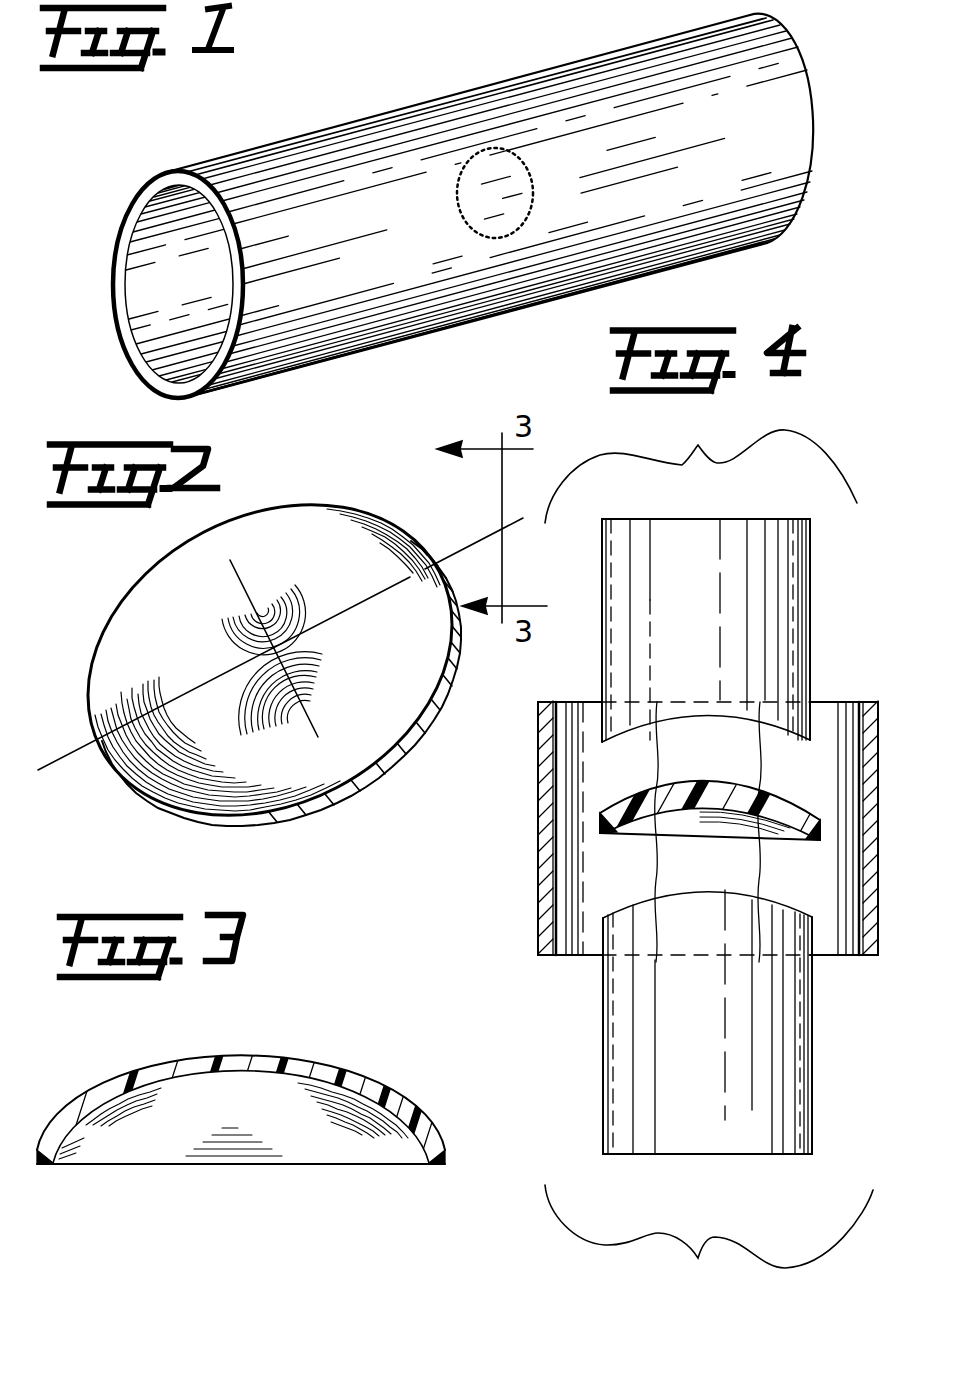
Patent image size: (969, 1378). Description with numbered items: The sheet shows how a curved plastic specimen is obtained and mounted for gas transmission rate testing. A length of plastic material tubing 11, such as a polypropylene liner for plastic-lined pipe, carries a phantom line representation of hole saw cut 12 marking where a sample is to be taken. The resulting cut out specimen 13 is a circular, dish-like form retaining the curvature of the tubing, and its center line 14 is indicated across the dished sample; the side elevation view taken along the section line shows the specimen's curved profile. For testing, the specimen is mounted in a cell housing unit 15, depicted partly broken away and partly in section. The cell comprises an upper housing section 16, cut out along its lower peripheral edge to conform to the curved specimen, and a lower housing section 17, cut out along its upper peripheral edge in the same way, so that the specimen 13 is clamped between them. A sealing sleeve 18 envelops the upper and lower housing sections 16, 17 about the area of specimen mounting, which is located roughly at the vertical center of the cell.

In FIG. 1, the length of plastic material tubing 11 is at (462, 113).
In FIG. 1, the phantom line representation of hole saw cut 12 is at (533, 177).
In FIG. 2, the cut out specimen 13 is at (281, 540).
In FIG. 3, the cut out specimen 13 is at (370, 1078).
In FIG. 4, the cut out specimen 13 is at (783, 806).
In FIG. 2, the center line of specimen 14 is at (70, 757).
In FIG. 4, the cell housing unit 15 is at (495, 813).
In FIG. 4, the upper housing section 16 is at (810, 590).
In FIG. 4, the lower housing section 17 is at (810, 1043).
In FIG. 4, the sealing sleeve 18 is at (868, 702).